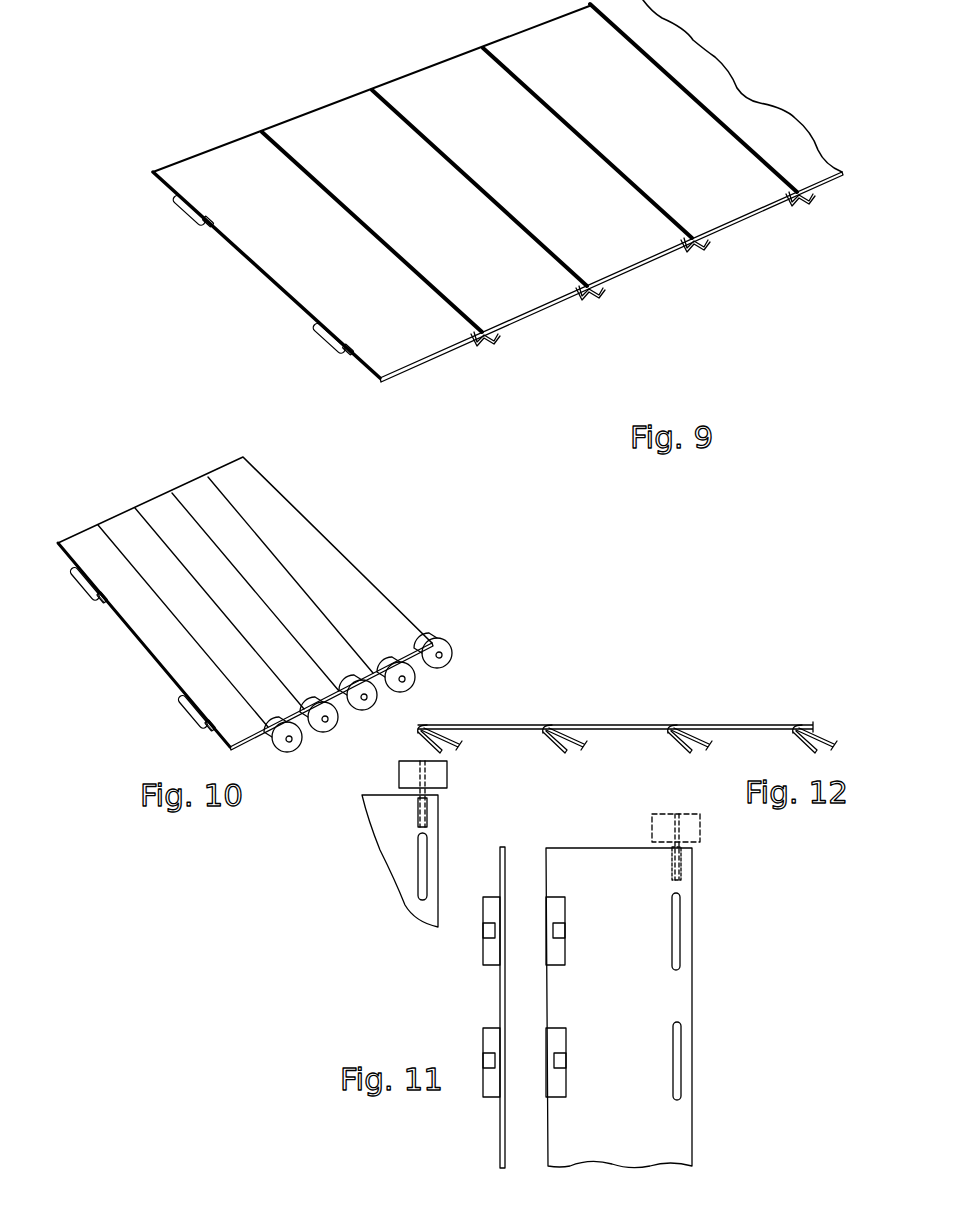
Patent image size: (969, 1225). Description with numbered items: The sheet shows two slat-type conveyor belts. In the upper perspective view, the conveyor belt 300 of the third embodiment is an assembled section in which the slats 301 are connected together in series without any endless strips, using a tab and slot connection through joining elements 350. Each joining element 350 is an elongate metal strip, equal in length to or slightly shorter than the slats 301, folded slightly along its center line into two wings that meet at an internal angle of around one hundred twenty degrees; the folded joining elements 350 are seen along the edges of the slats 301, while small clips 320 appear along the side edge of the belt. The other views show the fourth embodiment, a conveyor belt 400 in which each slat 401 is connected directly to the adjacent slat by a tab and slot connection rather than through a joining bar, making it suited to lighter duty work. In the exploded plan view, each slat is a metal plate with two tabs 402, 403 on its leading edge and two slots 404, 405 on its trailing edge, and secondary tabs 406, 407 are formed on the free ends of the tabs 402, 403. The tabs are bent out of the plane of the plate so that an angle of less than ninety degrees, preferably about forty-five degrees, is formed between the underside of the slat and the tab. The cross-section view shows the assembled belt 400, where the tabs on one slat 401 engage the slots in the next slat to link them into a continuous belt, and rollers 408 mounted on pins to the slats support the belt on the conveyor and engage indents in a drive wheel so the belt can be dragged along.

In FIG. 9, the conveyor belt 300 is at (736, 248).
In FIG. 9, the slat 301 is at (208, 150).
In FIG. 9, the edge clip 320 is at (188, 215).
In FIG. 9, the joining element 350 is at (490, 348).
In FIG. 10, the conveyor belt 400 is at (119, 500).
In FIG. 12, the conveyor belt 400 is at (780, 708).
In FIG. 12, the slat 401 is at (620, 725).
In FIG. 11, the tab 402 is at (550, 962).
In FIG. 11, the tab 403 is at (558, 1100).
In FIG. 11, the slot 404 is at (677, 956).
In FIG. 11, the slot 405 is at (680, 1084).
In FIG. 11, the secondary tab 406 is at (560, 925).
In FIG. 11, the secondary tab 407 is at (557, 1068).
In FIG. 10, the roller 408 is at (445, 648).
In FIG. 11, the roller 408 is at (680, 868).